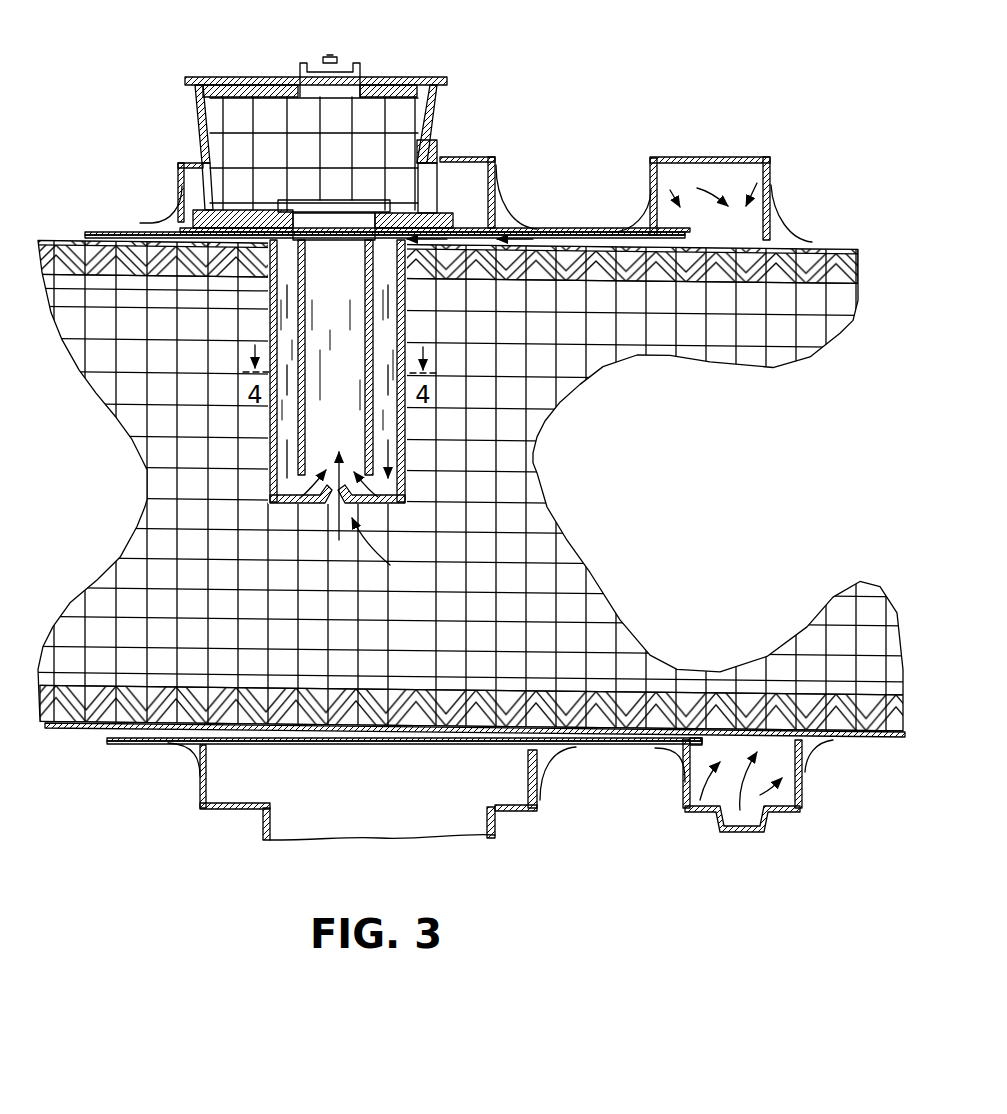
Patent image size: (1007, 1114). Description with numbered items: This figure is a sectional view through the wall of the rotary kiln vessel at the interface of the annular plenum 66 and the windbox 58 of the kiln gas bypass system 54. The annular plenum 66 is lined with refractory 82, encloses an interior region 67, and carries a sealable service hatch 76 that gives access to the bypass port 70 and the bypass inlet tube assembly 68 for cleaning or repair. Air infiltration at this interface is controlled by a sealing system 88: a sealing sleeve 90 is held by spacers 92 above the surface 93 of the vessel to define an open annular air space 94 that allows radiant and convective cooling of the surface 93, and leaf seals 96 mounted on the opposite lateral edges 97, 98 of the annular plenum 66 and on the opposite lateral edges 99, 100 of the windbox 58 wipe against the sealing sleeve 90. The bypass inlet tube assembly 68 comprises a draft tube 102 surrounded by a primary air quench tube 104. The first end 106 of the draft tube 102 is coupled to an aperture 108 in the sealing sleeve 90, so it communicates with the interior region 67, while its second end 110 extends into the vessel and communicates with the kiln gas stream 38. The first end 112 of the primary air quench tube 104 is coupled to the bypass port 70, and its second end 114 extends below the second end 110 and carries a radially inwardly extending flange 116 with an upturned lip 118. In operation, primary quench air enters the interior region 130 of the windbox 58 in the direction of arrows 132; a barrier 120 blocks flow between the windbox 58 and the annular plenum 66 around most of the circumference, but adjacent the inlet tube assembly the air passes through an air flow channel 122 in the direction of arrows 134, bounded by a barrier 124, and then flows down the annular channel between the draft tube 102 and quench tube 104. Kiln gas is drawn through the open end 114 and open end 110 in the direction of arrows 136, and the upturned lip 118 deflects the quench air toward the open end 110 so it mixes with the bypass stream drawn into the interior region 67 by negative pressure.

The kiln gas stream 38 is at (575, 462).
The kiln gas bypass system 54 is at (552, 107).
The windbox 58 is at (750, 140).
The annular plenum 66 is at (438, 104).
The interior region of annular plenum 67 is at (277, 137).
The bypass inlet tube assembly 68 is at (440, 419).
The bypass port 70 is at (293, 243).
The sealable service hatch 76 is at (352, 60).
The refractory 82 is at (425, 147).
The sealing system 88 is at (577, 168).
The sealing sleeve 90 is at (100, 232).
The spacers 92 is at (85, 232).
The surface of rotary vessel 93 is at (40, 240).
The open annular air space 94 is at (575, 243).
The leaf seals 96 is at (507, 212).
The lateral edge of annular plenum 97 is at (185, 165).
The lateral edge of annular plenum 98 is at (479, 160).
The lateral edge of windbox 99 is at (657, 160).
The lateral edge of windbox 100 is at (760, 158).
The draft tube 102 is at (339, 420).
The primary air quench tube 104 is at (285, 432).
The first end of draft tube 106 is at (347, 232).
The aperture 108 is at (334, 226).
The second end of draft tube 110 is at (380, 464).
The first end of primary air quench tube 112 is at (412, 263).
The second end of primary air quench tube 114 is at (427, 496).
The radially inwardly extending flange 116 is at (383, 505).
The upturned lip 118 is at (322, 500).
The barrier 120 is at (689, 737).
The air flow channel 122 is at (657, 247).
The barrier 124 is at (233, 235).
The interior region of windbox 130 is at (772, 190).
The arrows 132 is at (752, 850).
The arrows 134 is at (427, 230).
The arrows 136 is at (335, 505).